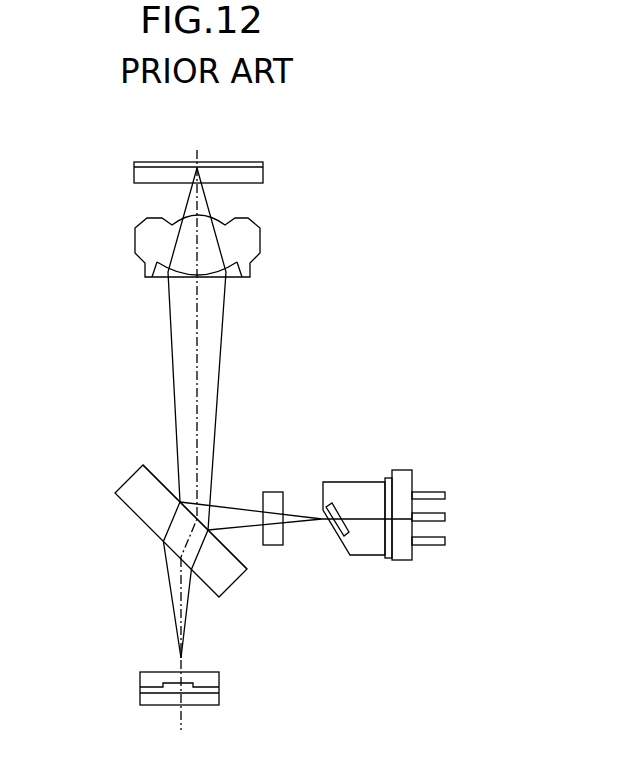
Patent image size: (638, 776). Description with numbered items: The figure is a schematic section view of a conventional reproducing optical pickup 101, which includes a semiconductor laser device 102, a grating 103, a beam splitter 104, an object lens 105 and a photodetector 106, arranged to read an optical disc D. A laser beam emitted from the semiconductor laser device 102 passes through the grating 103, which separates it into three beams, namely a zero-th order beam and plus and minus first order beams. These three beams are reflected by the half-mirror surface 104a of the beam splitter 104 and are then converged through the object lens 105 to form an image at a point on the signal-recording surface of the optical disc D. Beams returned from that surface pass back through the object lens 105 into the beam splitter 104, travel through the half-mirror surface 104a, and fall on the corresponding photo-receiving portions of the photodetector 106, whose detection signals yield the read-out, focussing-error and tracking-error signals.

The optical disc D is at (263, 173).
The optical pickup 101 is at (432, 288).
The semiconductor laser device 102 is at (362, 557).
The grating 103 is at (273, 545).
The beam splitter 104 is at (142, 522).
The half-mirror surface 104a is at (155, 476).
The object lens 105 is at (260, 243).
The photodetector 106 is at (140, 675).